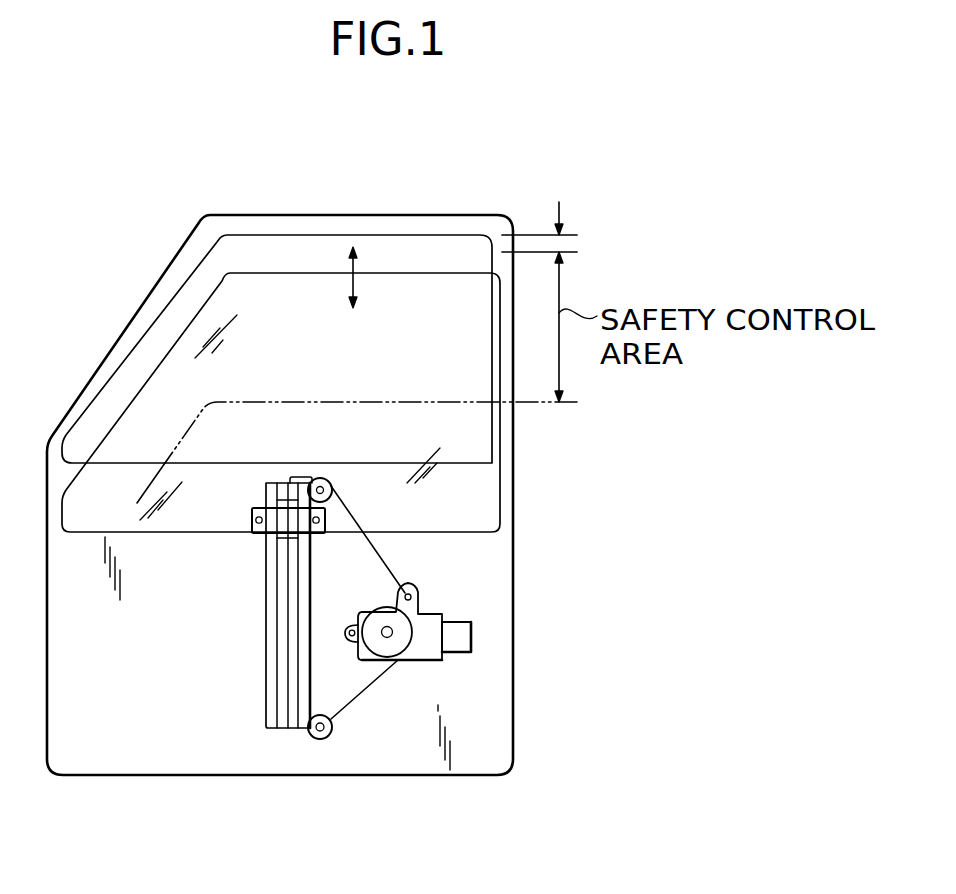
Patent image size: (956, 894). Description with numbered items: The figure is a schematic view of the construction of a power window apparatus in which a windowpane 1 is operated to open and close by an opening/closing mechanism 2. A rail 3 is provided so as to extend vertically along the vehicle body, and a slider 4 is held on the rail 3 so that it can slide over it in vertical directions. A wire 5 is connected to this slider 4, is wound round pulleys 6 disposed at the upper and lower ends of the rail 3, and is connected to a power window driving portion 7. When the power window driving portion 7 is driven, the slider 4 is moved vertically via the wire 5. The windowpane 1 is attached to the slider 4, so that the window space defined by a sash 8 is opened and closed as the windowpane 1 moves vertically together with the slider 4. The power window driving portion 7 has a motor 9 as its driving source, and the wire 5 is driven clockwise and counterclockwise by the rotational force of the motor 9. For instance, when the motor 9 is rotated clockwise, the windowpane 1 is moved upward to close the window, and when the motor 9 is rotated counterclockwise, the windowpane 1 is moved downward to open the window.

The windowpane 1 is at (475, 510).
The opening/closing mechanism 2 is at (402, 630).
The rail 3 is at (273, 698).
The slider 4 is at (283, 517).
The wire 5 is at (357, 707).
The pulleys 6 is at (323, 486).
The power window driving portion 7 is at (427, 648).
The sash 8 is at (298, 213).
The motor 9 is at (457, 630).